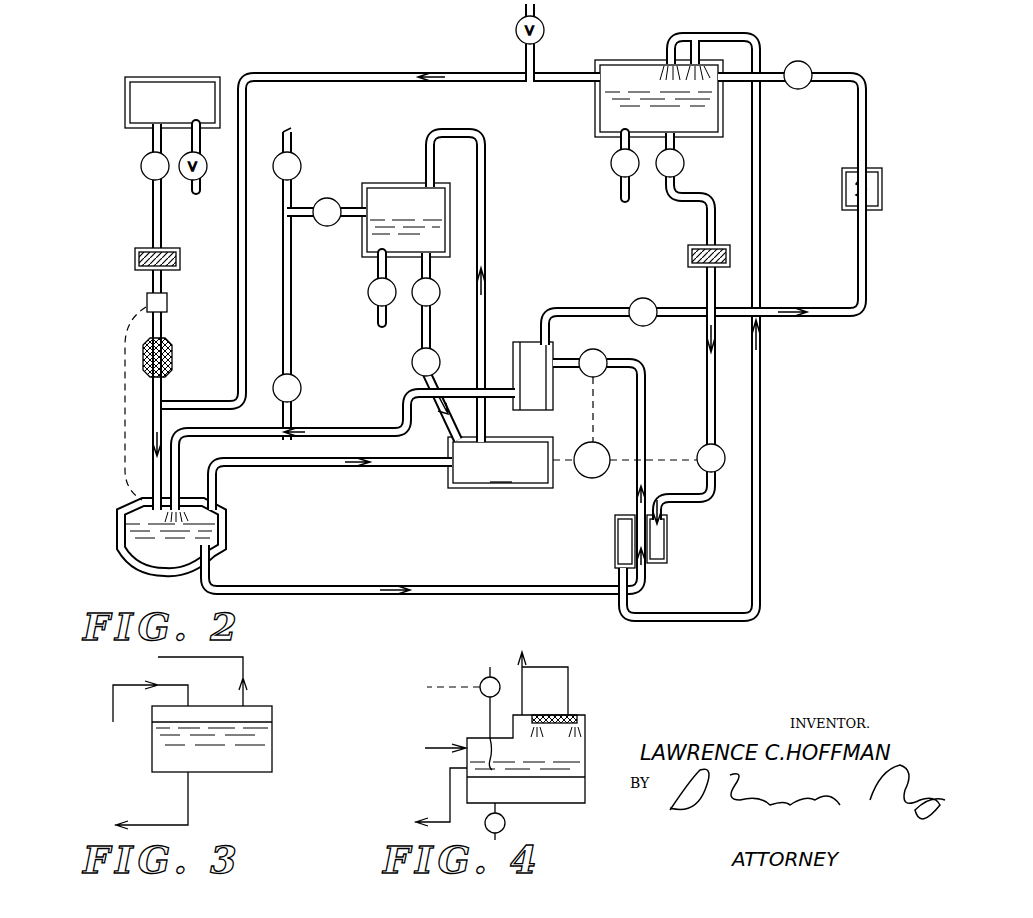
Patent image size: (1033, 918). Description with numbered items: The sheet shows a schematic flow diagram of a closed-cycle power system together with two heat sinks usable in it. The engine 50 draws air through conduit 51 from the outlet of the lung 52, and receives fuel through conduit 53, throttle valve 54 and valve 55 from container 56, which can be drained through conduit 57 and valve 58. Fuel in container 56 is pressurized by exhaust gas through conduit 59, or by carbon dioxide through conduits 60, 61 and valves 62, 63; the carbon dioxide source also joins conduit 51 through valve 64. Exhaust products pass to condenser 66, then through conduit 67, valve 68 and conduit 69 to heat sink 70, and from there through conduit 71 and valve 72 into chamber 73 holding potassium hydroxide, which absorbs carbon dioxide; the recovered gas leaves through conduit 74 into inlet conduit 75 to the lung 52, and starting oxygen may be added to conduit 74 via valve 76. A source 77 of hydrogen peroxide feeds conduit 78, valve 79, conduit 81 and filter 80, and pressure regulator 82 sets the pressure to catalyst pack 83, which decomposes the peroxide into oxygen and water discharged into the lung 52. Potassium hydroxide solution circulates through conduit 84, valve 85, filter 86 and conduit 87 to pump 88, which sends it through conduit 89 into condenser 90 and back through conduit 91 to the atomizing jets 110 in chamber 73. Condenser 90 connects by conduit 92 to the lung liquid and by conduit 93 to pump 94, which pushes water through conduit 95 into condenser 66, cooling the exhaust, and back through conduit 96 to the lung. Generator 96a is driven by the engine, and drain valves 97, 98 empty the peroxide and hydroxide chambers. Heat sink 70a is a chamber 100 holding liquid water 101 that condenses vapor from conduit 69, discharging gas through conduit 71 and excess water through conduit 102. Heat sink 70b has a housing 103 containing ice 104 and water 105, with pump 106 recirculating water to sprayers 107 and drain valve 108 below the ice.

In FIG. 2, the engine 50 is at (500, 462).
In FIG. 2, the conduit 51 is at (344, 475).
In FIG. 2, the lung 52 is at (121, 531).
In FIG. 2, the conduit 53 is at (424, 386).
In FIG. 2, the throttle valve 54 is at (412, 358).
In FIG. 2, the valve 55 is at (440, 297).
In FIG. 2, the container 56 is at (362, 250).
In FIG. 2, the conduit 57 is at (378, 270).
In FIG. 2, the valve 58 is at (370, 297).
In FIG. 2, the conduit 59 is at (483, 218).
In FIG. 2, the conduit 60 is at (300, 174).
In FIG. 2, the conduit 61 is at (305, 216).
In FIG. 2, the valve 62 is at (300, 157).
In FIG. 2, the valve 63 is at (322, 200).
In FIG. 2, the valve 64 is at (301, 393).
In FIG. 2, the condenser 66 is at (520, 340).
In FIG. 2, the conduit 67 is at (597, 308).
In FIG. 2, the valve 68 is at (655, 301).
In FIG. 2, the conduit 69 is at (838, 310).
In FIG. 3, the conduit 69 is at (113, 722).
In FIG. 4, the conduit 69 is at (440, 750).
In FIG. 2, the heat sink 70 is at (882, 192).
In FIG. 2, the conduit 71 is at (867, 132).
In FIG. 3, the conduit 71 is at (248, 663).
In FIG. 4, the conduit 71 is at (523, 685).
In FIG. 2, the valve 72 is at (811, 66).
In FIG. 2, the chamber 73 is at (640, 58).
In FIG. 2, the conduit 74 is at (374, 74).
In FIG. 2, the inlet conduit 75 is at (157, 456).
In FIG. 2, the valve 76 is at (516, 28).
In FIG. 2, the source of oxidizer 77 is at (125, 102).
In FIG. 2, the conduit 78 is at (152, 141).
In FIG. 2, the valve 79 is at (143, 171).
In FIG. 2, the filter 80 is at (134, 259).
In FIG. 2, the conduit 81 is at (152, 214).
In FIG. 2, the pressure regulator 82 is at (146, 303).
In FIG. 2, the catalyst pack 83 is at (142, 358).
In FIG. 2, the conduit 84 is at (683, 150).
In FIG. 2, the valve 85 is at (685, 172).
In FIG. 2, the filter 86 is at (688, 256).
In FIG. 2, the conduit 87 is at (706, 390).
In FIG. 2, the pump 88 is at (699, 448).
In FIG. 2, the conduit 89 is at (697, 500).
In FIG. 2, the condenser 90 is at (615, 536).
In FIG. 2, the conduit 91 is at (658, 625).
In FIG. 2, the conduit 92 is at (353, 592).
In FIG. 2, the conduit 93 is at (636, 404).
In FIG. 2, the pump 94 is at (599, 349).
In FIG. 2, the conduit 95 is at (588, 380).
In FIG. 2, the conduit 96 is at (371, 430).
In FIG. 2, the generator 96a is at (598, 480).
In FIG. 2, the drain valve 97 is at (201, 180).
In FIG. 2, the drain valve 98 is at (613, 171).
In FIG. 3, the chamber 100 is at (272, 712).
In FIG. 3, the liquid water 101 is at (268, 766).
In FIG. 3, the conduit 102 is at (190, 820).
In FIG. 4, the conduit 102 is at (450, 793).
In FIG. 4, the housing 103 is at (586, 738).
In FIG. 4, the ice 104 is at (573, 797).
In FIG. 4, the water 105 is at (586, 768).
In FIG. 4, the pump 106 is at (486, 677).
In FIG. 4, the sprayers 107 is at (586, 717).
In FIG. 4, the drain valve 108 is at (506, 823).
In FIG. 2, the atomizing jets 110 is at (711, 36).
In FIG. 3, the heat sink 70a is at (271, 792).
In FIG. 4, the heat sink 70b is at (597, 834).